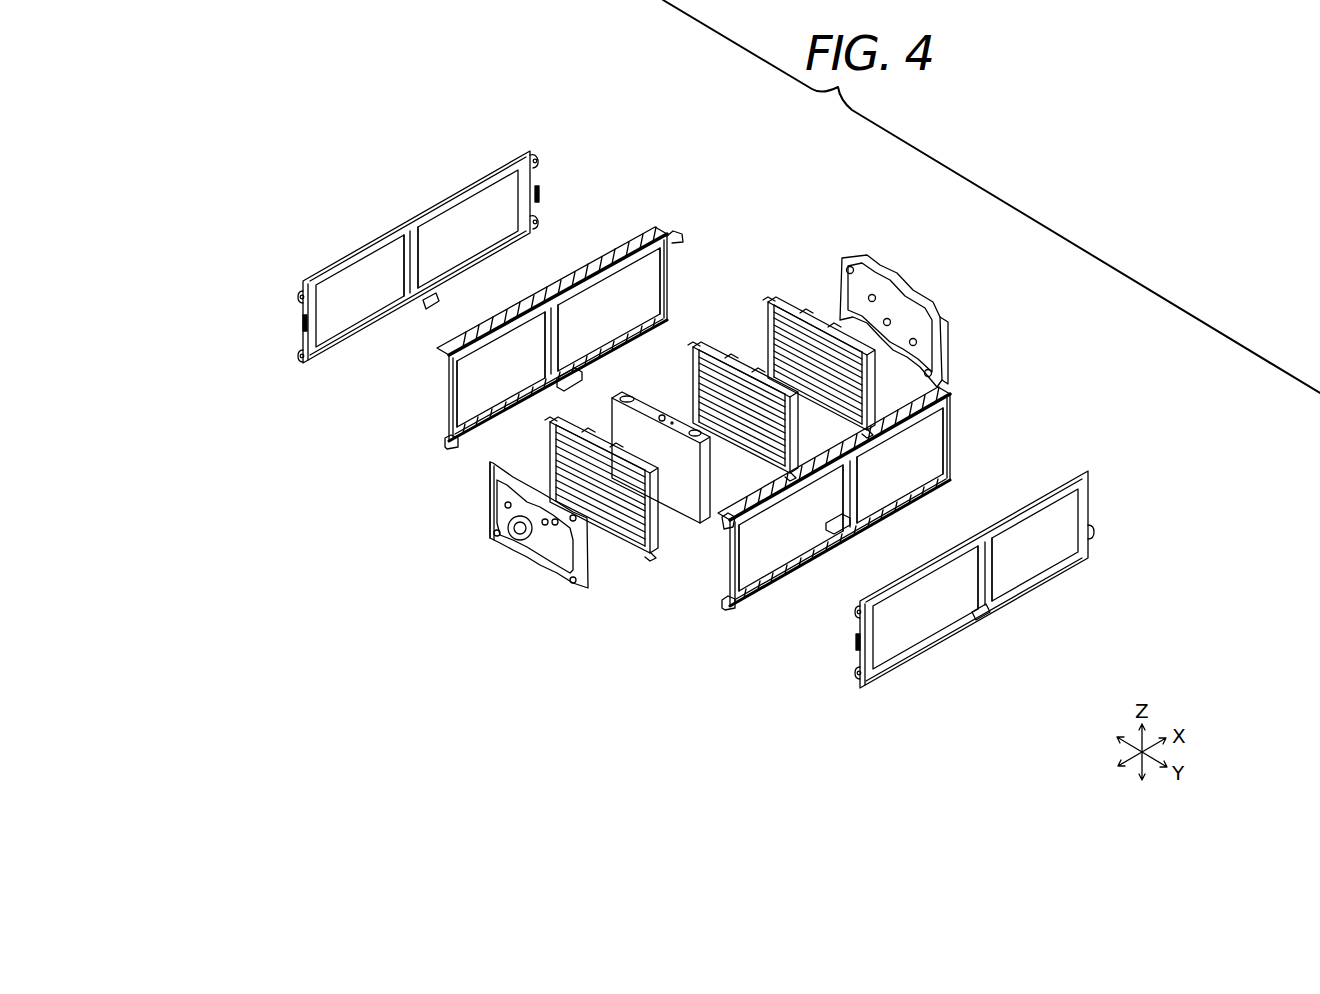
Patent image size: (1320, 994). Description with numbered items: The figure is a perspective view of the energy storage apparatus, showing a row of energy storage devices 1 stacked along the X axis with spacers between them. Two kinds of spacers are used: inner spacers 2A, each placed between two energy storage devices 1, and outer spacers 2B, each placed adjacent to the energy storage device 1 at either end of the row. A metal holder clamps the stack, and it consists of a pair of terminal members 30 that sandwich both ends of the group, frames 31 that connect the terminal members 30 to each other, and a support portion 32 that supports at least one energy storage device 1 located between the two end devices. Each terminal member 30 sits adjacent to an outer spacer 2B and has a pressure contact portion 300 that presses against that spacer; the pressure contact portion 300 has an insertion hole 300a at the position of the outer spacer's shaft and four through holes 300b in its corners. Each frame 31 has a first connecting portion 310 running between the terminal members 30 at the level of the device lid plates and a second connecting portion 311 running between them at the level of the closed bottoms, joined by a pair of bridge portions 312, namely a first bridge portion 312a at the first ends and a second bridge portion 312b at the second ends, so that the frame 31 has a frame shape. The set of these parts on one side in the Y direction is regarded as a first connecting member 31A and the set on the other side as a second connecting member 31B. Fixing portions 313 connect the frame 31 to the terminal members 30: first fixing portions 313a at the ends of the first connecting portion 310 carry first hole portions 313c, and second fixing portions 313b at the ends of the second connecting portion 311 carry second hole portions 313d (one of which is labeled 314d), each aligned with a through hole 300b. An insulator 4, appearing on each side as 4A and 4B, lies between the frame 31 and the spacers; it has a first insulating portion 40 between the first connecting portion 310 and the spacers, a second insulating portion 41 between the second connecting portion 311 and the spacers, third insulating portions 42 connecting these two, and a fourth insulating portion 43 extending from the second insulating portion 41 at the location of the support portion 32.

The energy storage device 1 is at (678, 521).
The inner spacer 2A is at (728, 340).
The outer spacer 2B is at (810, 292).
The insulator 4 is at (632, 465).
The frame 4A is at (712, 609).
The frame 4B is at (423, 444).
The terminal member 30 is at (919, 273).
The frame 31 is at (725, 416).
The first connecting member 31A is at (1102, 464).
The second connecting member 31B is at (342, 209).
The support portion 32 is at (412, 300).
The first insulating portion 40 is at (687, 215).
The second insulating portion 41 is at (682, 309).
The third insulating portion 42 is at (685, 274).
The fourth insulating portion 43 is at (562, 382).
The pressure contact portion 300 is at (540, 533).
The insertion hole 300a is at (497, 533).
The through hole 300b is at (490, 480).
The first connecting portion 310 is at (420, 212).
The second connecting portion 311 is at (388, 322).
The bridge portion 312 is at (590, 415).
The first bridge portion 312a is at (549, 188).
The second bridge portion 312b is at (868, 642).
The fixing portion 313 is at (688, 432).
The first fixing portion 313a is at (545, 163).
The second fixing portion 313b is at (541, 223).
The first hole portion 313c is at (535, 160).
The second hole portion 313d is at (302, 350).
The engaging tab 314d is at (522, 243).